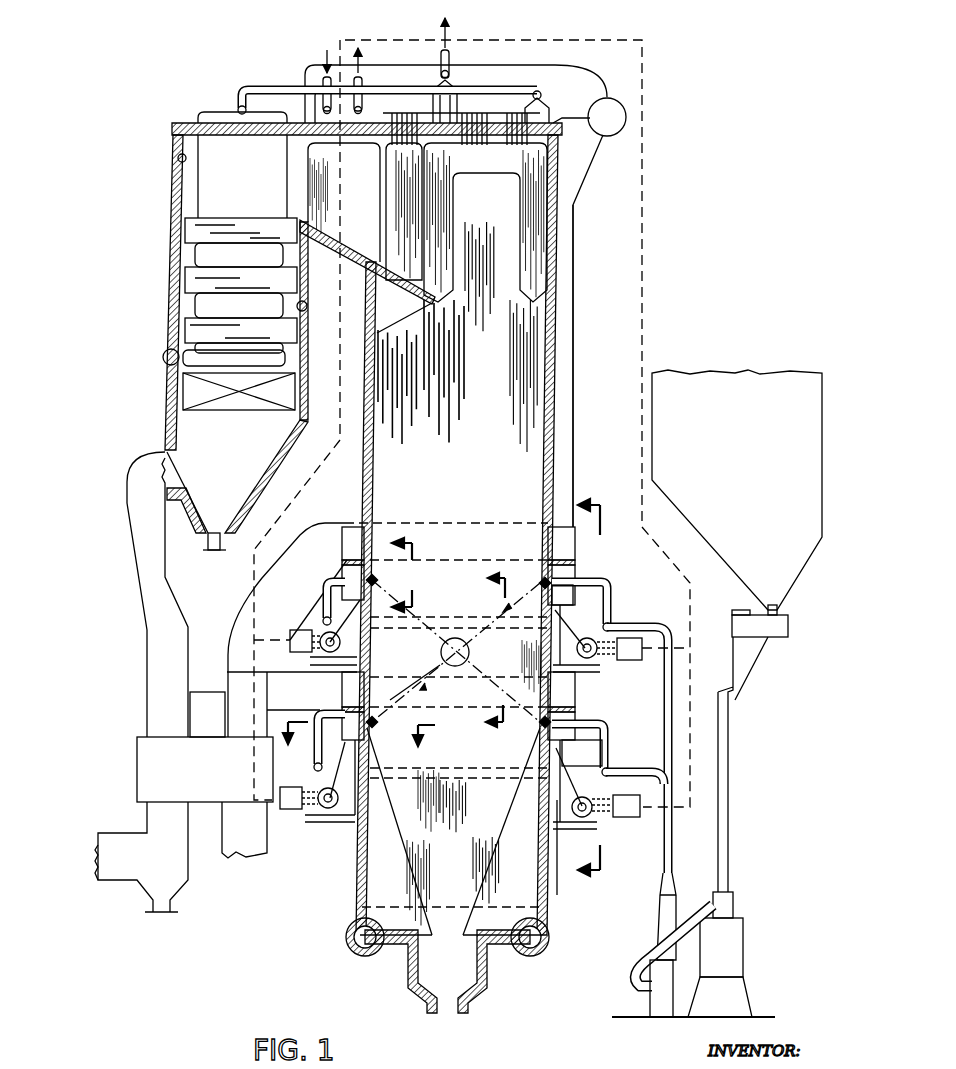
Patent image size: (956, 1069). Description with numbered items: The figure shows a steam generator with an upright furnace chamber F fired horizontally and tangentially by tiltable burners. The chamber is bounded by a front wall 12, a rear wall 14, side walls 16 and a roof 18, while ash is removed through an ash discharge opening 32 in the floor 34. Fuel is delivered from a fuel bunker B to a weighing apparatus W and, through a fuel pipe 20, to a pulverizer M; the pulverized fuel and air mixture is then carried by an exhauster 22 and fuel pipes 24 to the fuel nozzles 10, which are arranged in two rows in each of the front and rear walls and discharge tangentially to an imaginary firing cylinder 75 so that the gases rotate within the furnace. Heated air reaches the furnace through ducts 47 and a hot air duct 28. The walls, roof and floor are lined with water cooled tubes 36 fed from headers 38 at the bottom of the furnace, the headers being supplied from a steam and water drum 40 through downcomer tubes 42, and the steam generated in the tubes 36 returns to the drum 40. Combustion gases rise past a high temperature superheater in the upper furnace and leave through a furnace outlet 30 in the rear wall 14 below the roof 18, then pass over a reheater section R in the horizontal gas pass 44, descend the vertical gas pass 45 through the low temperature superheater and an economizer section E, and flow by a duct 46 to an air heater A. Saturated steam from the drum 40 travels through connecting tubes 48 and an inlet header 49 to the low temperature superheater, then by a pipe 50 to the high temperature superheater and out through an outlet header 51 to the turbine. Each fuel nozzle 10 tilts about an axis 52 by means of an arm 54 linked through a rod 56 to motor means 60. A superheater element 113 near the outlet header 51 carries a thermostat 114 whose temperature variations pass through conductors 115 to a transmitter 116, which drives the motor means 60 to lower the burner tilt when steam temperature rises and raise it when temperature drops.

The fuel nozzle 10 is at (378, 577).
The front wall 12 is at (556, 452).
The rear wall 14 is at (366, 450).
The side walls 16 is at (493, 408).
The roof 18 is at (506, 145).
The fuel pipe 20 is at (729, 818).
The exhauster 22 is at (650, 1000).
The fuel pipes 24 is at (322, 586).
The hot air duct 28 is at (348, 527).
The furnace outlet 30 is at (365, 211).
The ash discharge opening 32 is at (446, 936).
The floor 34 is at (490, 936).
The water cooled tubes 36 is at (392, 140).
The headers 38 is at (352, 952).
The steam and water drum 40 is at (624, 110).
The downcomer tubes 42 is at (574, 318).
The horizontal gas pass 44 is at (338, 244).
The vertical gas pass 45 is at (306, 304).
The duct 46 is at (127, 565).
The ducts 47 is at (254, 610).
The connecting tubes 48 is at (176, 152).
The inlet header 49 is at (164, 362).
The pipe 50 is at (300, 90).
The outlet header 51 is at (440, 76).
The axis 52 is at (258, 218).
The arm 54 is at (582, 753).
The rod 56 is at (573, 600).
The motor means 60 is at (328, 630).
The imaginary firing cylinder 75 is at (462, 666).
The superheater element 113 is at (455, 82).
The thermostat 114 is at (455, 78).
The conductors 115 is at (402, 40).
The transmitter 116 is at (296, 652).
The air heater A is at (137, 770).
The fuel bunker B is at (800, 385).
The economizer section E is at (262, 412).
The furnace chamber F is at (458, 481).
The pulverizer M is at (743, 938).
The reheater section R is at (349, 180).
The weighing apparatus W is at (790, 622).